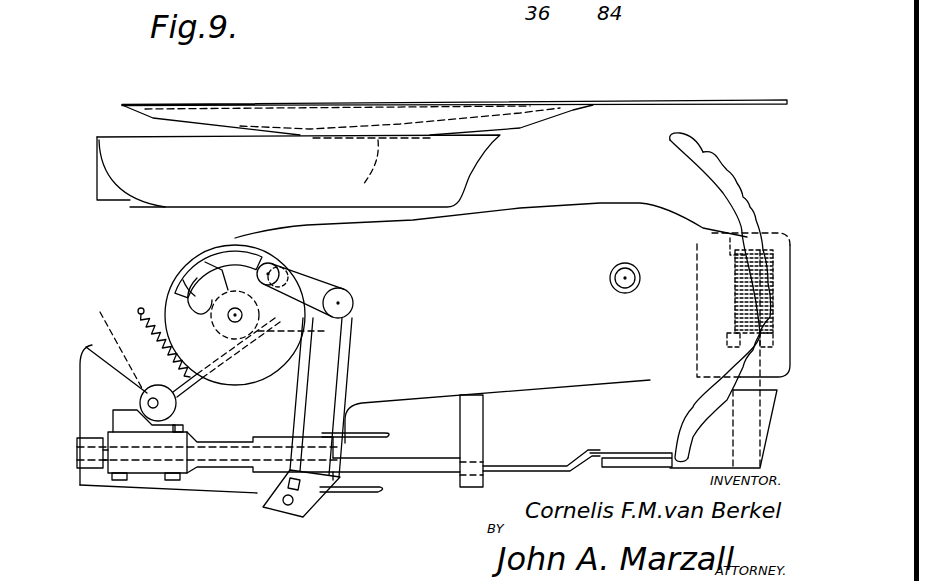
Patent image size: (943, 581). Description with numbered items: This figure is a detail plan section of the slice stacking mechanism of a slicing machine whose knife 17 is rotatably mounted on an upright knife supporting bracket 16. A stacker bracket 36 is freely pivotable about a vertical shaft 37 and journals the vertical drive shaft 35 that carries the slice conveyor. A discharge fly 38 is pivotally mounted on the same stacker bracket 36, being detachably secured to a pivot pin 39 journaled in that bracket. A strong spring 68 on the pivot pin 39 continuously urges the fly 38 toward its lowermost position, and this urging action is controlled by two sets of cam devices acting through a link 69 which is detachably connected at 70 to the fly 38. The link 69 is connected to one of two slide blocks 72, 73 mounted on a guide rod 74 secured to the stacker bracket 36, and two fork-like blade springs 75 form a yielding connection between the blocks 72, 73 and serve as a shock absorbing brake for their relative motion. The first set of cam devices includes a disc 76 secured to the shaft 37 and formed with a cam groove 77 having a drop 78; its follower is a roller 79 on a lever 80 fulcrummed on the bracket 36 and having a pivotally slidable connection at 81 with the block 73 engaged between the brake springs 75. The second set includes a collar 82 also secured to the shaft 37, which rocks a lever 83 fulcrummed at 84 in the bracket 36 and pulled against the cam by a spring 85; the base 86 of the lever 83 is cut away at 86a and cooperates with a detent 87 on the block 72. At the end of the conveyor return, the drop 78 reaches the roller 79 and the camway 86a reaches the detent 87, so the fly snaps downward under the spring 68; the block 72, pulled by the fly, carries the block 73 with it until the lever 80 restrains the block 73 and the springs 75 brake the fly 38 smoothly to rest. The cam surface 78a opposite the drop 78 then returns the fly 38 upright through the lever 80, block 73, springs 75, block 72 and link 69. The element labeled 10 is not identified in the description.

The slicing machine 10 is at (85, 488).
The knife supporting bracket 16 is at (127, 143).
The knife 17 is at (200, 105).
The vertical drive shaft 35 is at (622, 288).
The stacker bracket 36 is at (435, 348).
The vertical shaft 37 is at (242, 313).
The discharge fly 38 is at (703, 152).
The pivot pin 39 is at (752, 436).
The strong spring 68 is at (770, 315).
The link 69 is at (533, 474).
The connection of link to fly 70 is at (657, 465).
The slide block 72 is at (162, 468).
The slide block 73 is at (260, 493).
The guide rod 74 is at (440, 475).
The fork-like blade springs 75 is at (387, 432).
The disc 76 is at (226, 357).
The cam groove 77 is at (223, 258).
The drop 78 is at (212, 290).
The cam surface 78a is at (187, 283).
The roller 79 is at (260, 262).
The lever 80 is at (315, 287).
The pivotally slidable connection 81 is at (287, 513).
The collar 82 is at (207, 267).
The lever 83 is at (355, 318).
The fulcrum 84 is at (108, 341).
The spring 85 is at (140, 312).
The base of lever 86 is at (86, 347).
The camway 86a is at (178, 423).
The detent 87 is at (122, 412).